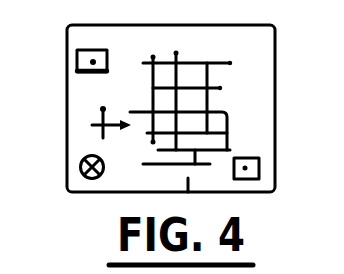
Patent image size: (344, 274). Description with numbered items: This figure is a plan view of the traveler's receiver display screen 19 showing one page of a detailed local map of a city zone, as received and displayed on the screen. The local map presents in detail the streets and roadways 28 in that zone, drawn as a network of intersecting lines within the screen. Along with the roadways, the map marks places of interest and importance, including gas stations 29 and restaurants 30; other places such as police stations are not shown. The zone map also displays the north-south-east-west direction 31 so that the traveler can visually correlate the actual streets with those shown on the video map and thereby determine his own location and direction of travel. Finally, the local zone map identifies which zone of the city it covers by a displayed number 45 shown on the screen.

The display screen 19 is at (279, 91).
The streets and roadways 28 is at (207, 79).
The gas stations 29 is at (78, 70).
The restaurants 30 is at (83, 176).
The north-south-east-west direction 31 is at (97, 125).
The displayed number 45 is at (189, 191).